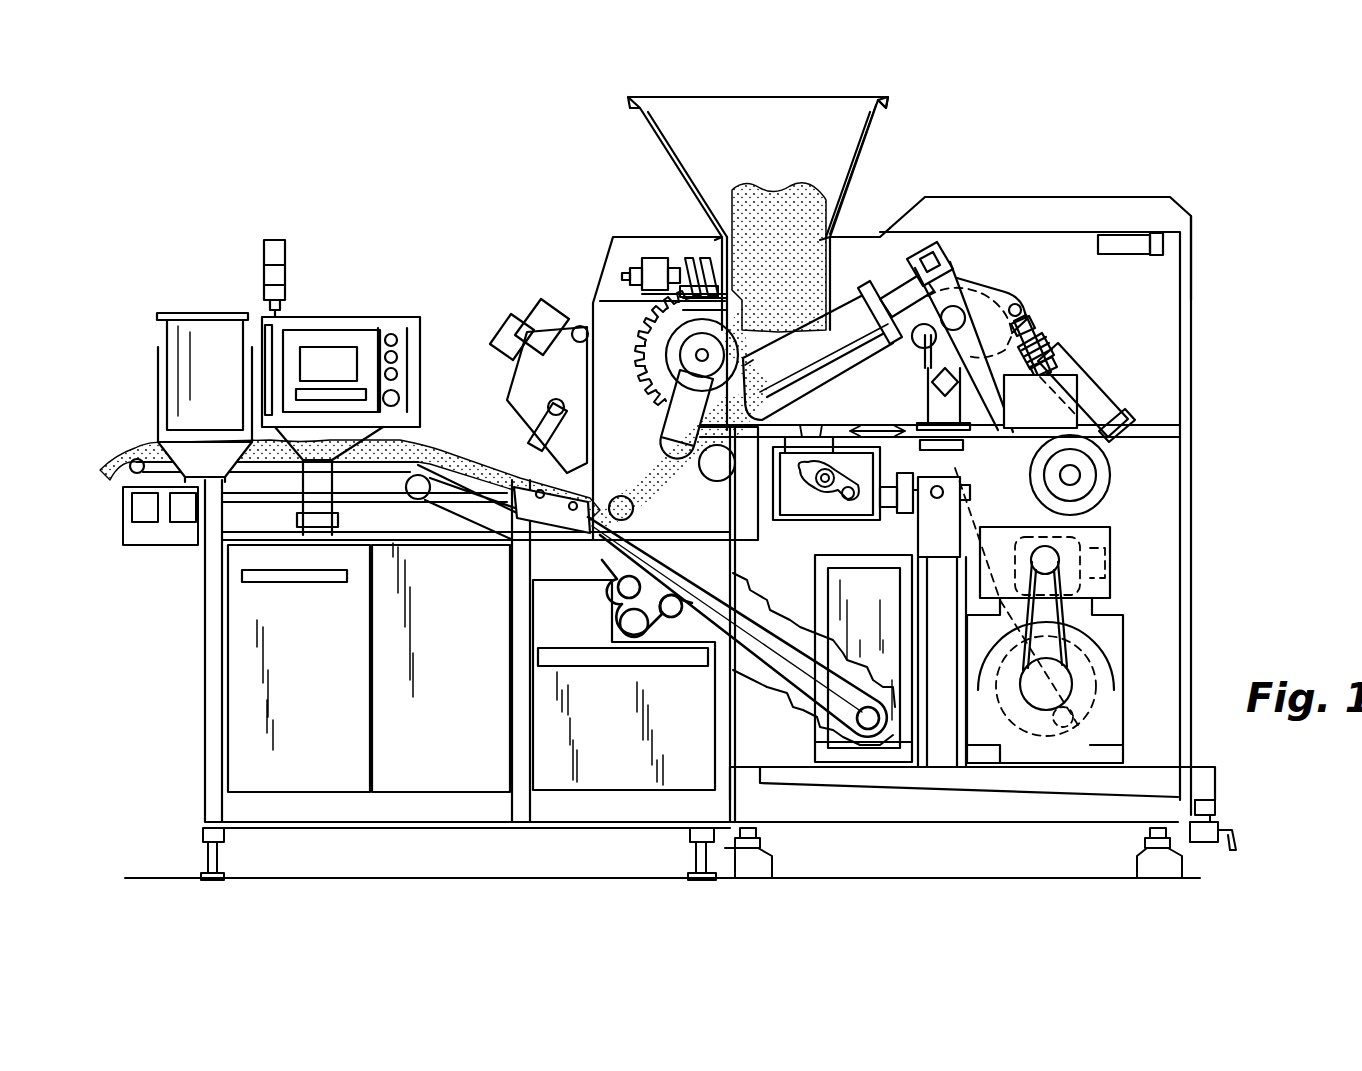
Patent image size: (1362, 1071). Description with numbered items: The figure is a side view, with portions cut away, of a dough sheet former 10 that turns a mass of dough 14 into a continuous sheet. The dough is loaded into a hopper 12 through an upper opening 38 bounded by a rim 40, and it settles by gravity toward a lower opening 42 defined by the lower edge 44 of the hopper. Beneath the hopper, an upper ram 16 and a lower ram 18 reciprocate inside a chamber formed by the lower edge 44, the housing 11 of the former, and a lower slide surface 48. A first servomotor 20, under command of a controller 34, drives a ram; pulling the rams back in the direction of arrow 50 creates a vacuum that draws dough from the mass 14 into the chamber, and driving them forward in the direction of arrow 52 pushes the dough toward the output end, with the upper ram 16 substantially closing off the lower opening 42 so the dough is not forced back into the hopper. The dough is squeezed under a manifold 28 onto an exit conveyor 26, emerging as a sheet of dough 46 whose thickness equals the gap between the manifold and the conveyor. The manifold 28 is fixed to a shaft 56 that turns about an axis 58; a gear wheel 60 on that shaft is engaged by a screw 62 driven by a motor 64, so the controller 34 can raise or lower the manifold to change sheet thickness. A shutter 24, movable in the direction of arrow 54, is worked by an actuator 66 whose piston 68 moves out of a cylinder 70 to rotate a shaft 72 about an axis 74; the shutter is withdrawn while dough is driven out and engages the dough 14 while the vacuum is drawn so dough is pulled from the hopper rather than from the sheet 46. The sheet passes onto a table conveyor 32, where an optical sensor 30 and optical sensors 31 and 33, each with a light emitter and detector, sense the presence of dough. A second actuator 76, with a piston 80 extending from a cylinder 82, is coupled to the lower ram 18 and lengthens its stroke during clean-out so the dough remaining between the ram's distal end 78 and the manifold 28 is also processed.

The dough sheet former 10 is at (1088, 132).
The housing 11 is at (1193, 226).
The hopper 12 is at (866, 142).
The mass of dough 14 is at (762, 200).
The upper ram 16 is at (850, 295).
The lower ram 18 is at (872, 350).
The first servomotor 20 is at (1115, 570).
The shutter 24 is at (722, 470).
The exit conveyor 26 is at (676, 498).
The manifold 28 is at (655, 422).
The optical sensor 30 is at (535, 433).
The optical sensor 31 is at (512, 522).
The table conveyor 32 is at (130, 470).
The optical sensor 33 is at (575, 512).
The controller 34 is at (385, 320).
The upper opening 38 is at (792, 112).
The rim 40 is at (880, 102).
The lower opening 42 is at (690, 300).
The lower edge 44 is at (690, 312).
The sheet of dough 46 is at (432, 447).
The lower slide surface 48 is at (858, 350).
The arrow 50 is at (967, 242).
The arrow 52 is at (955, 260).
The arrow 54 is at (866, 432).
The shaft 56 is at (657, 391).
The axis 58 is at (702, 355).
The gear wheel 60 is at (645, 338).
The screw 62 is at (692, 258).
The motor 64 is at (647, 258).
The actuator 66 is at (905, 475).
The piston 68 is at (885, 507).
The cylinder 70 is at (904, 508).
The shaft 72 is at (822, 483).
The axis 74 is at (815, 518).
The actuator 76 is at (1080, 365).
The distal end 78 is at (752, 400).
The piston 80 is at (1040, 330).
The cylinder 82 is at (1112, 405).